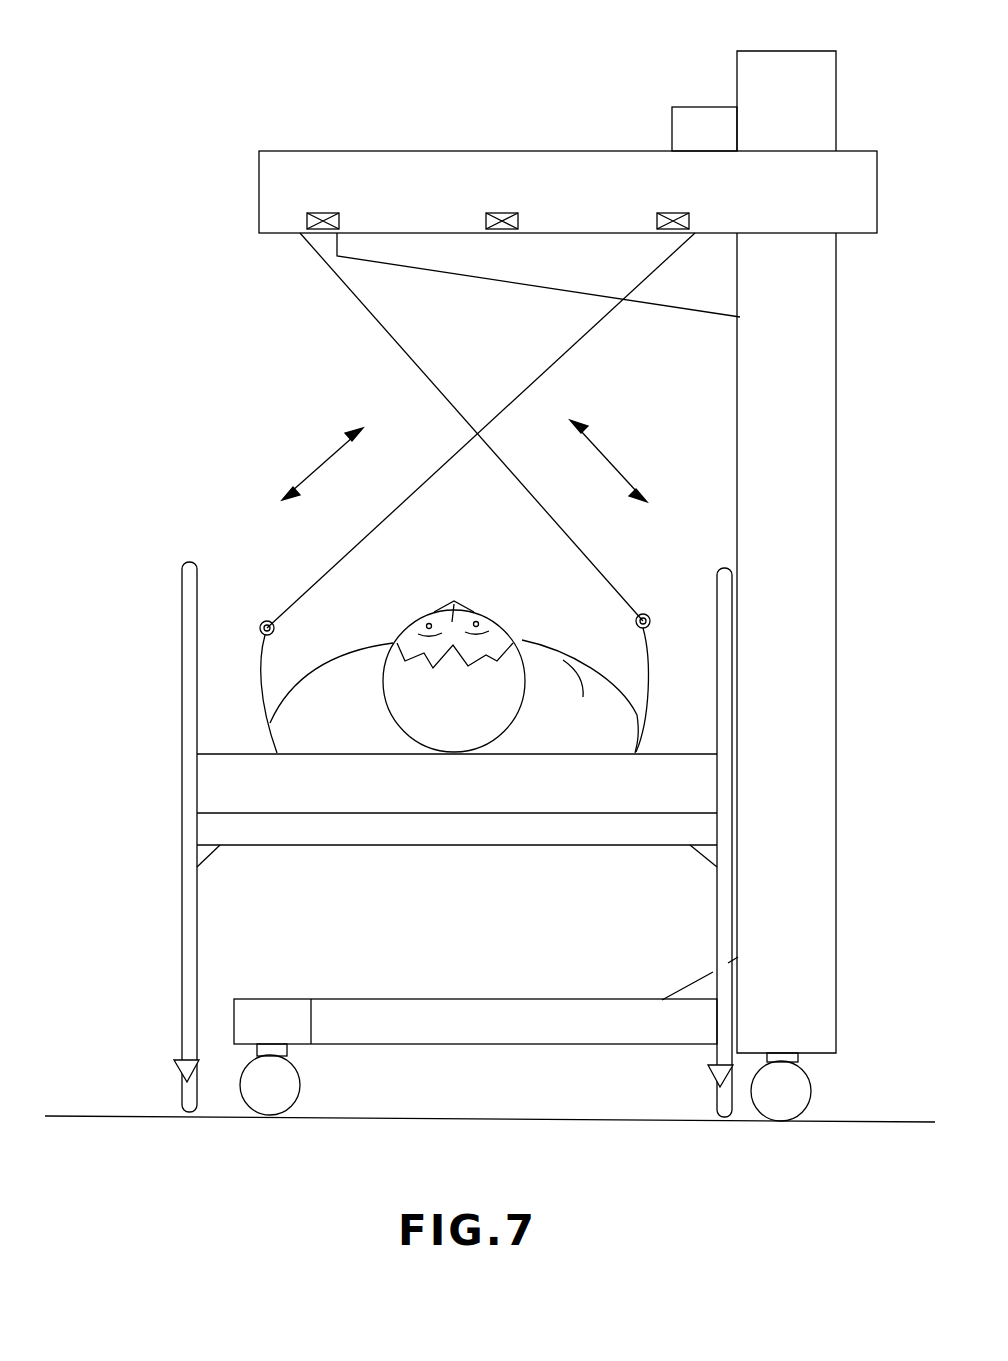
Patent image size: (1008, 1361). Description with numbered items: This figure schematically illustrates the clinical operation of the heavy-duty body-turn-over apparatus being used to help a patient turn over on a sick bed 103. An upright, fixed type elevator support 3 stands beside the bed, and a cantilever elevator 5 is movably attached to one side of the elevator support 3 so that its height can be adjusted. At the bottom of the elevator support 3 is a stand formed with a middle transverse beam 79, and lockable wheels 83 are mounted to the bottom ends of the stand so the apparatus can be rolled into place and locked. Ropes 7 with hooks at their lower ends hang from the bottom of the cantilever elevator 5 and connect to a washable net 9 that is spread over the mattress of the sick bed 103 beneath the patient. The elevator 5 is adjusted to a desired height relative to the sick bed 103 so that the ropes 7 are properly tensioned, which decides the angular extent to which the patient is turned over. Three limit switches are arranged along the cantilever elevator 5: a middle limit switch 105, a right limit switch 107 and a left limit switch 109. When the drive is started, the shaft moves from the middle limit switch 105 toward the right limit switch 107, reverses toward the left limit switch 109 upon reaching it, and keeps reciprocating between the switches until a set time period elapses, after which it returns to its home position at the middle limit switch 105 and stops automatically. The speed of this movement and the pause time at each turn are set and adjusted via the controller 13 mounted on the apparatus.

The fixed type elevator support 3 is at (772, 702).
The cantilever elevator 5 is at (728, 268).
The ropes 7 is at (362, 302).
The net 9 is at (259, 693).
The controller 13 is at (694, 118).
The middle transverse beam 79 is at (418, 1028).
The lockable wheels 83 is at (267, 1083).
The sick bed 103 is at (465, 795).
The middle limit switch 105 is at (495, 213).
The right limit switch 107 is at (668, 213).
The left limit switch 109 is at (322, 213).